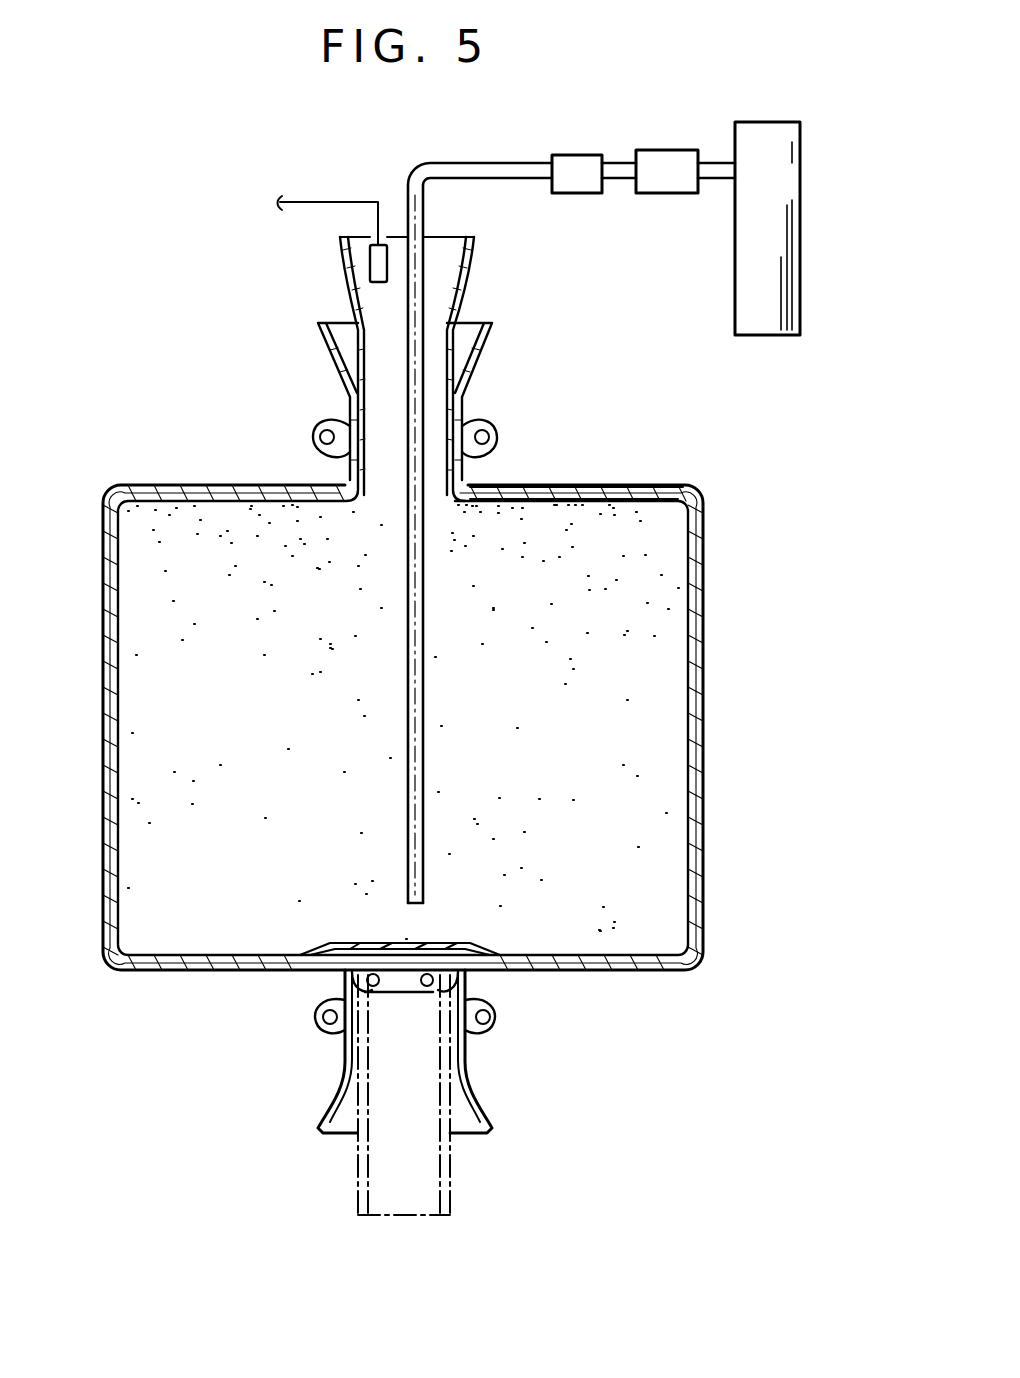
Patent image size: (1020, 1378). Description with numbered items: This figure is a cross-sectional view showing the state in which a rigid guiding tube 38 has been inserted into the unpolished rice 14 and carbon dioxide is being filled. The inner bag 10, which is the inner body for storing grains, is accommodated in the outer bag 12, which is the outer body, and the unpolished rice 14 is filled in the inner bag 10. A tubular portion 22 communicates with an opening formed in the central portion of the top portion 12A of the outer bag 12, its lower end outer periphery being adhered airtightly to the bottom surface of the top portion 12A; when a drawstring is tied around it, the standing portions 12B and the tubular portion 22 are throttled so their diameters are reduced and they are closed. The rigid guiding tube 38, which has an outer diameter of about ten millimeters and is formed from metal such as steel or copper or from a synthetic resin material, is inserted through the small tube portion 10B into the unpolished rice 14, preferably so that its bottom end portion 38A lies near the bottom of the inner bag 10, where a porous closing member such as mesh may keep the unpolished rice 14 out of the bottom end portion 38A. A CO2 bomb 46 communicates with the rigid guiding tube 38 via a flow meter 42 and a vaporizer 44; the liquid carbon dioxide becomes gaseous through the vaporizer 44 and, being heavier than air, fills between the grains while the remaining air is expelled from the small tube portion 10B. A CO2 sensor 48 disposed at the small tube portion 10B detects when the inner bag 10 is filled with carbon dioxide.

The inner bag 10 is at (672, 834).
The small tube portion 10B is at (455, 270).
The outer bag 12 is at (720, 796).
The top portion 12A is at (608, 487).
The standing portions 12B is at (478, 442).
The unpolished rice 14 is at (660, 706).
The tubular portion 22 is at (468, 353).
The rigid guiding tube 38 is at (430, 213).
The bottom end portion 38A is at (421, 899).
The flow meter 42 is at (568, 155).
The vaporizer 44 is at (665, 150).
The CO2 bomb 46 is at (778, 196).
The CO2 sensor 48 is at (360, 236).